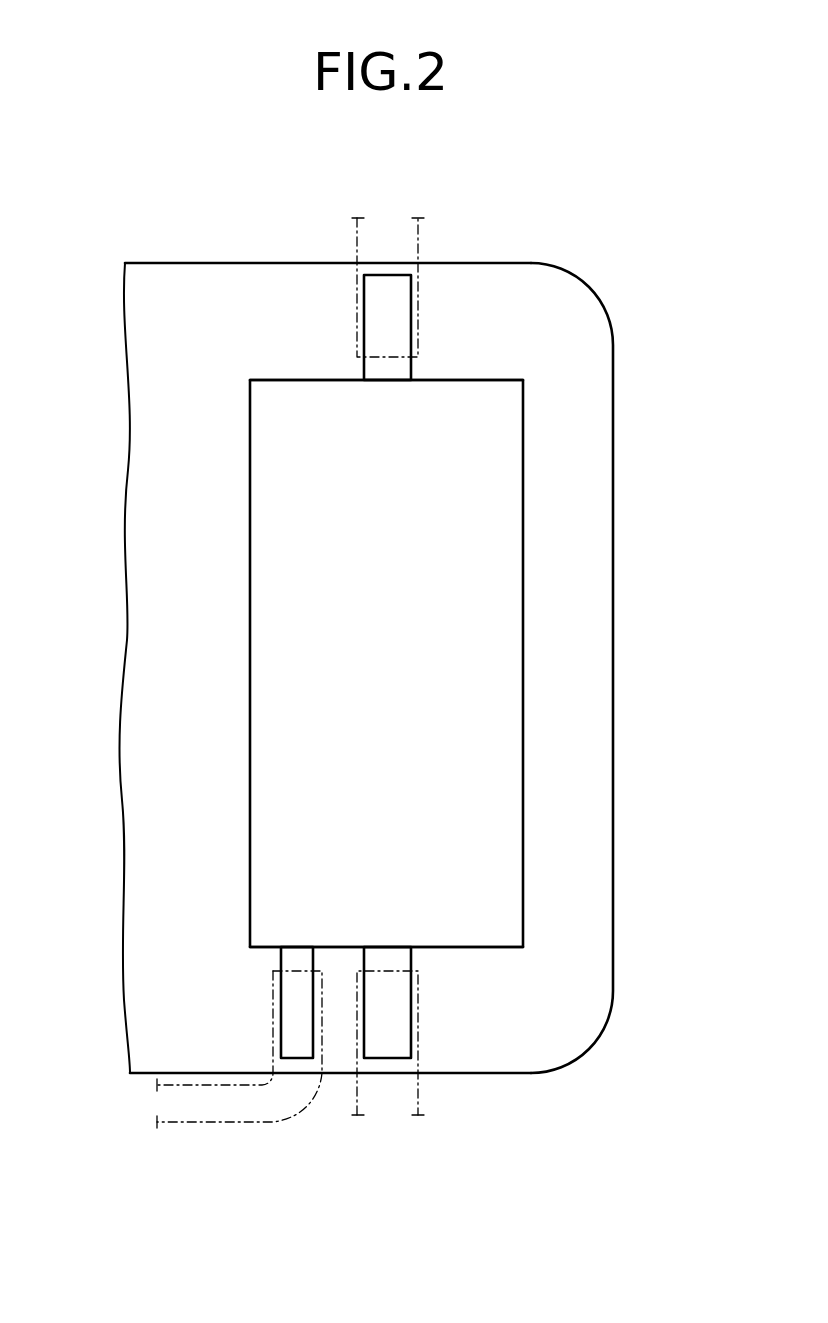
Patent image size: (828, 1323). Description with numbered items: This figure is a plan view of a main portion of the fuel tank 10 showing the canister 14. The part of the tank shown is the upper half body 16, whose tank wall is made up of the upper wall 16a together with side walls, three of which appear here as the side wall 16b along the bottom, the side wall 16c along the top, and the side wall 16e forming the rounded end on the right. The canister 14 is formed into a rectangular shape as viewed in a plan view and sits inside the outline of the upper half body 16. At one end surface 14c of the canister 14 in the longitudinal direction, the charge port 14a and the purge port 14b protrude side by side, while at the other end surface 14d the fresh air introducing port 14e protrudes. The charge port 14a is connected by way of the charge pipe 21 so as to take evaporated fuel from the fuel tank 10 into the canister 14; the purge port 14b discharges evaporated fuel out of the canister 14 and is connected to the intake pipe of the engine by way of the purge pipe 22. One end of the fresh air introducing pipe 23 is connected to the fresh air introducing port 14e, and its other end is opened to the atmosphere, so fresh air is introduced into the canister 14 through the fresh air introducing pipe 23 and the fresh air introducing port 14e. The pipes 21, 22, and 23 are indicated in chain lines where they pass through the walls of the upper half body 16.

The fuel tank 10 is at (660, 216).
The canister 14 is at (524, 507).
The charge port 14a is at (303, 1059).
The purge port 14b is at (395, 1059).
The one end surface 14c is at (478, 947).
The other end surface 14d is at (478, 380).
The fresh air introducing port 14e is at (386, 274).
The upper half body 16 is at (231, 261).
The upper wall 16a is at (202, 670).
The side wall 16b is at (497, 1074).
The side wall 16c is at (300, 261).
The side wall 16e is at (613, 670).
The charge pipe 21 is at (182, 1123).
The purge pipe 22 is at (418, 1095).
The fresh air introducing pipe 23 is at (418, 243).